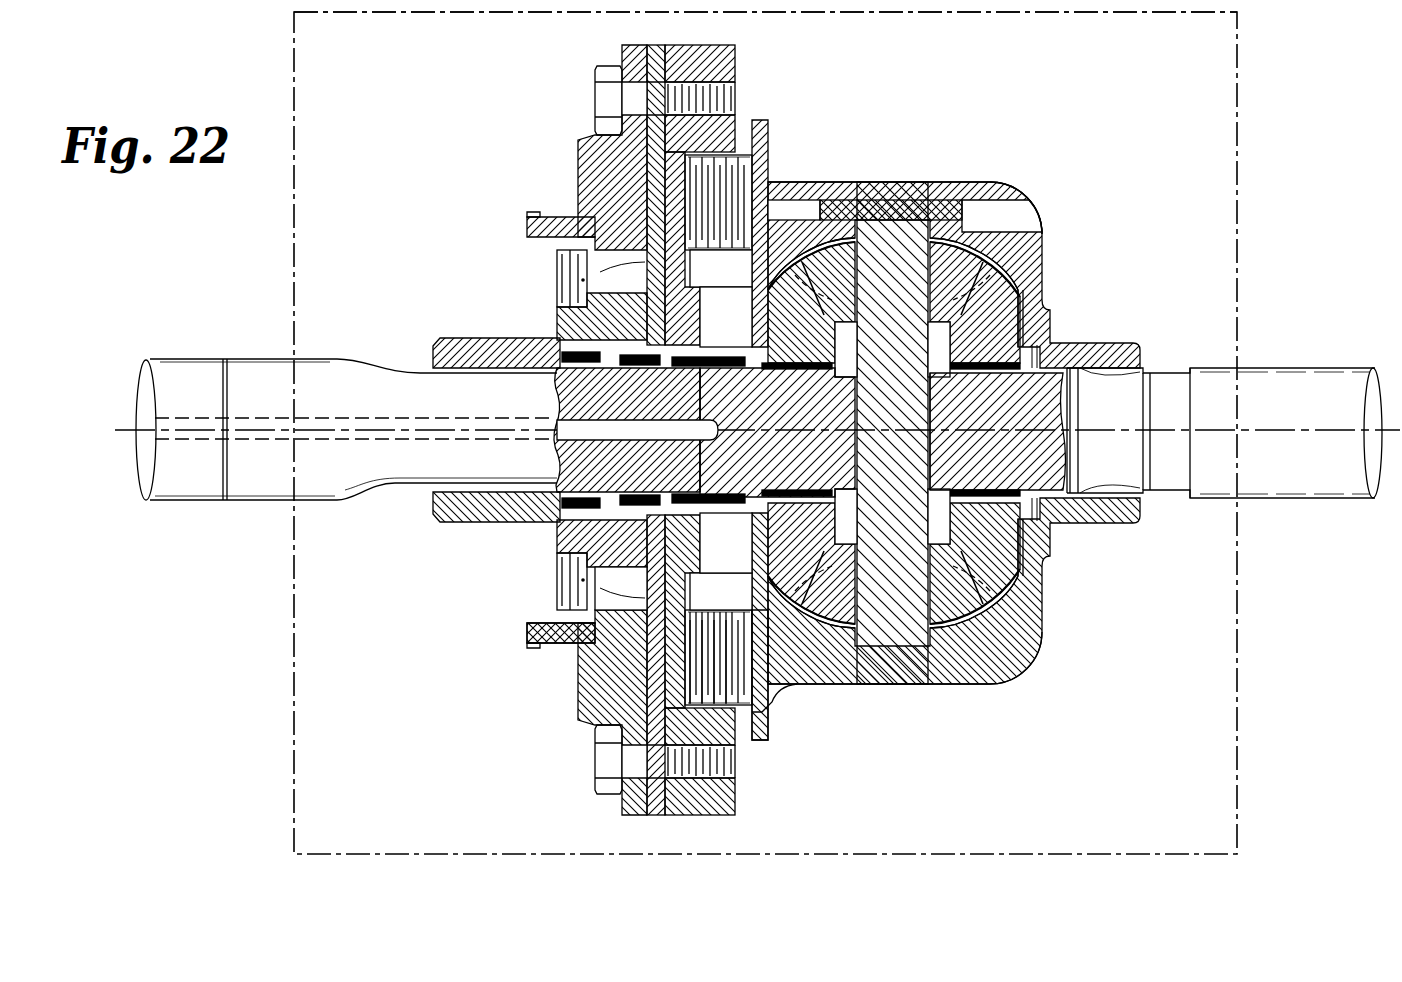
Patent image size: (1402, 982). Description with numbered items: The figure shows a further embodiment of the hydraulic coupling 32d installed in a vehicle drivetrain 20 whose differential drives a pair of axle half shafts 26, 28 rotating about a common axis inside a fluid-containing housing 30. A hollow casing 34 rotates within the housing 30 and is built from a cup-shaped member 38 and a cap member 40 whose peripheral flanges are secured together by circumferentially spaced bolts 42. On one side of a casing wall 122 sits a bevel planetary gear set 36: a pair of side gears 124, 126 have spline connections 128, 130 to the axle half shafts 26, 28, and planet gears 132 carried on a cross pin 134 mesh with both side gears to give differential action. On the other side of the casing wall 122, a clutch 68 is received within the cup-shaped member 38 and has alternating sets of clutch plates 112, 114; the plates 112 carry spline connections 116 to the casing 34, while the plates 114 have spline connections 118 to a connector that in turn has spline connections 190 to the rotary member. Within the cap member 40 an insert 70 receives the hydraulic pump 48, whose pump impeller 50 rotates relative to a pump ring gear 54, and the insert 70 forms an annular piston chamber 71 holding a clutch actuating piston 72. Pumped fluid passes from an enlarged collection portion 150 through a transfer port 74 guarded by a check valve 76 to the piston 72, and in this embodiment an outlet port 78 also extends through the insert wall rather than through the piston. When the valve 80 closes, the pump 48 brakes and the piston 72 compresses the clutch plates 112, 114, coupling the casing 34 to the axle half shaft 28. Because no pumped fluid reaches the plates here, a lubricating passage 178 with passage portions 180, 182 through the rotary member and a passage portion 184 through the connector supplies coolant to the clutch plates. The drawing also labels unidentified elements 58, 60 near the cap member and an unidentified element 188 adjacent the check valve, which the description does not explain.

The vehicle drivetrain 20 is at (1262, 44).
The axle half shaft 26 is at (246, 357).
The axle half shaft 28 is at (1298, 382).
The housing 30 is at (1238, 133).
The hydraulic coupling 32d is at (933, 162).
The casing 34 is at (991, 178).
The planetary gear set 36 is at (1033, 290).
The cup-shaped member 38 is at (957, 686).
The cap member 40 is at (578, 160).
The bolts 42 is at (598, 98).
The hydraulic pump 48 is at (575, 232).
The pump impeller 50 is at (600, 332).
The ring gear 54 is at (628, 612).
The retaining ring 58 is at (562, 262).
The seal ring 60 is at (575, 285).
The clutch 68 is at (764, 712).
The pump housing insert 70 is at (696, 160).
The annular piston chamber 71 is at (648, 192).
The clutch actuating piston 72 is at (702, 182).
The transfer port 74 is at (530, 226).
The check valve 76 is at (686, 303).
The outlet port 78 is at (548, 538).
The valve 80 is at (632, 600).
The clutch plates 112 is at (612, 382).
The clutch plates 114 is at (724, 662).
The spline connections 116 is at (746, 706).
The spline connections 118 is at (727, 608).
The casing wall 122 is at (942, 582).
The side gear 124 is at (1030, 305).
The side gear 126 is at (827, 347).
The spline connections 128 is at (948, 384).
The spline connections 130 is at (770, 374).
The planet gears 132 is at (1007, 243).
The cross pin 134 is at (934, 472).
The collection portion 150 is at (636, 615).
The lubricating passage 178 is at (418, 412).
The passage portion 180 is at (380, 472).
The passage portion 182 is at (703, 445).
The passage portion 184 is at (710, 366).
The spring chamber 188 is at (716, 360).
The spline connections 190 is at (625, 383).